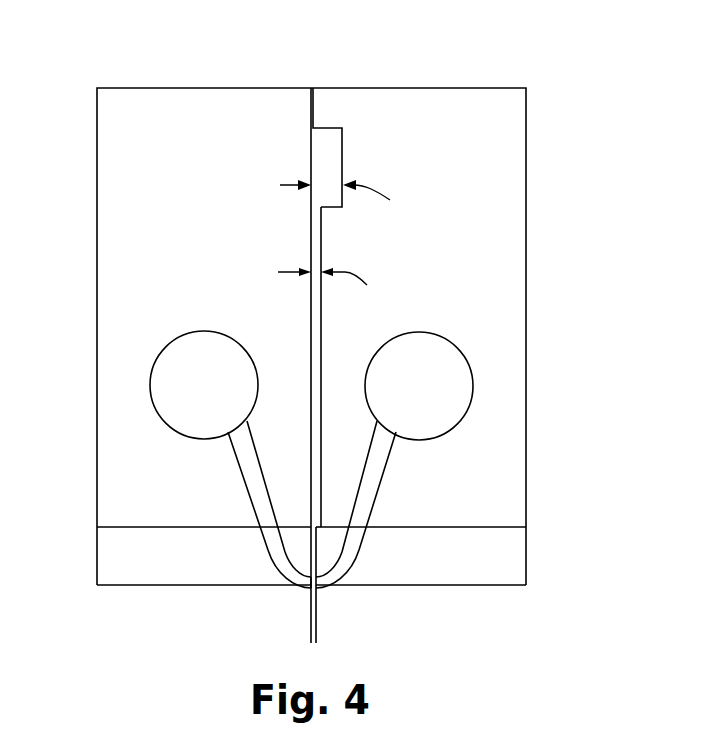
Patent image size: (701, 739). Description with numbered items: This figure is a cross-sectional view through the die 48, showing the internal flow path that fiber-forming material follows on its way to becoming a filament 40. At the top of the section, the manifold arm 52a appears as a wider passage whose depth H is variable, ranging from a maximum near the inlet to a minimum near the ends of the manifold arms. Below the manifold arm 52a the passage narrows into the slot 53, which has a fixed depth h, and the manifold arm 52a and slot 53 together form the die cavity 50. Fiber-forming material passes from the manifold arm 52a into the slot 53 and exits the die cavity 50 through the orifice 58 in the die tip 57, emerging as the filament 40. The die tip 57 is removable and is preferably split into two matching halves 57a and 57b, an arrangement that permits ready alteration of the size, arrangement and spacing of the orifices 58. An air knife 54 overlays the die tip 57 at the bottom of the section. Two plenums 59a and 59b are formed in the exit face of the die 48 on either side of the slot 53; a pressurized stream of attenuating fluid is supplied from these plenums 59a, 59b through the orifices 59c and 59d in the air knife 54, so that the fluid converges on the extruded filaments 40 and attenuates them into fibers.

The die 48 is at (441, 78).
The die cavity 50 is at (330, 356).
The manifold arm 52a is at (343, 157).
The slot 53 is at (310, 323).
The air knife 54 is at (498, 563).
The die tip 57 is at (334, 510).
The die tip half 57a is at (343, 545).
The die tip half 57b is at (297, 578).
The orifice 58 is at (305, 537).
The plenum 59a is at (447, 368).
The plenum 59b is at (173, 360).
The orifice 59c is at (327, 545).
The orifice 59d is at (308, 580).
The filament 40 is at (316, 622).
The variable depth H is at (346, 199).
The fixed depth h is at (331, 286).